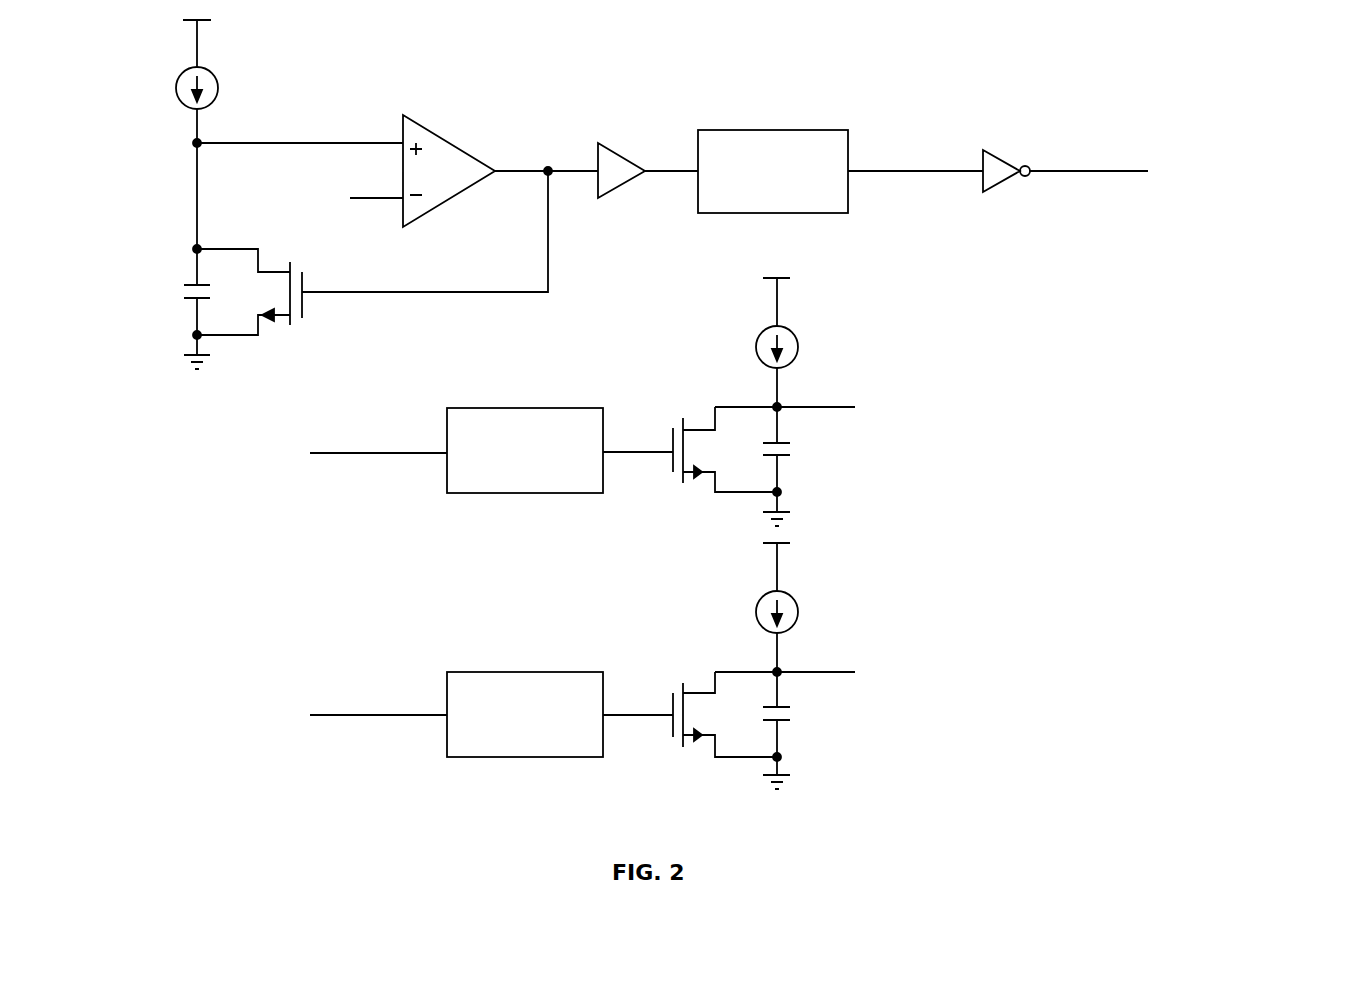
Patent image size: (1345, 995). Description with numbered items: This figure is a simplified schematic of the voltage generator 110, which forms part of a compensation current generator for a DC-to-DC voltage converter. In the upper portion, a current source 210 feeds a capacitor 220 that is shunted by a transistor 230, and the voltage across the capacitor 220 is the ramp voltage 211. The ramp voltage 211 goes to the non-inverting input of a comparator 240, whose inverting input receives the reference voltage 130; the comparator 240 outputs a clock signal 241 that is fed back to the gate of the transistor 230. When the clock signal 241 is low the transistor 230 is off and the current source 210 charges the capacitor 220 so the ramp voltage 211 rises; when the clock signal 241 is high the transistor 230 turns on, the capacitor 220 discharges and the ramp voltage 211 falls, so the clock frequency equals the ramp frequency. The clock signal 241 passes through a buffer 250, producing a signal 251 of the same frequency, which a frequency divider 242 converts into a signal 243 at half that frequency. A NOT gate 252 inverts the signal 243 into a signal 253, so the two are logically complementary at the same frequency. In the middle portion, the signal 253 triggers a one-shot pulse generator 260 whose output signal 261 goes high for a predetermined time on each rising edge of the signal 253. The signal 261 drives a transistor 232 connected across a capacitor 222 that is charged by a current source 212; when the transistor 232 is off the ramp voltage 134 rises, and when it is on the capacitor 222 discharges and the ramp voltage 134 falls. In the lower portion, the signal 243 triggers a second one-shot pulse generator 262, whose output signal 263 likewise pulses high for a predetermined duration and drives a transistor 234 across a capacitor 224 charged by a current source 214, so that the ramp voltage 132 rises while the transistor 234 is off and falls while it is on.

The voltage generator 110 is at (1243, 105).
The current source 210 is at (218, 92).
The ramp voltage 211 is at (250, 128).
The reference voltage 130 is at (380, 198).
The comparator 240 is at (442, 139).
The clock signal 241 is at (508, 172).
The buffer 250 is at (626, 187).
The signal 251 is at (690, 172).
The frequency divider 242 is at (760, 213).
The signal 243 is at (915, 172).
The NOT gate 252 is at (996, 186).
The signal 253 is at (1094, 172).
The capacitor 220 is at (190, 298).
The transistor 230 is at (302, 310).
The current source 212 is at (798, 347).
The ramp voltage 134 is at (845, 408).
The signal 261 is at (633, 452).
The transistor 232 is at (672, 460).
The capacitor 222 is at (783, 456).
The one-shot pulse generator 260 is at (520, 493).
The current source 214 is at (798, 612).
The ramp voltage 132 is at (845, 673).
The signal 263 is at (633, 715).
The transistor 234 is at (672, 725).
The capacitor 224 is at (783, 721).
The one-shot pulse generator 262 is at (520, 757).